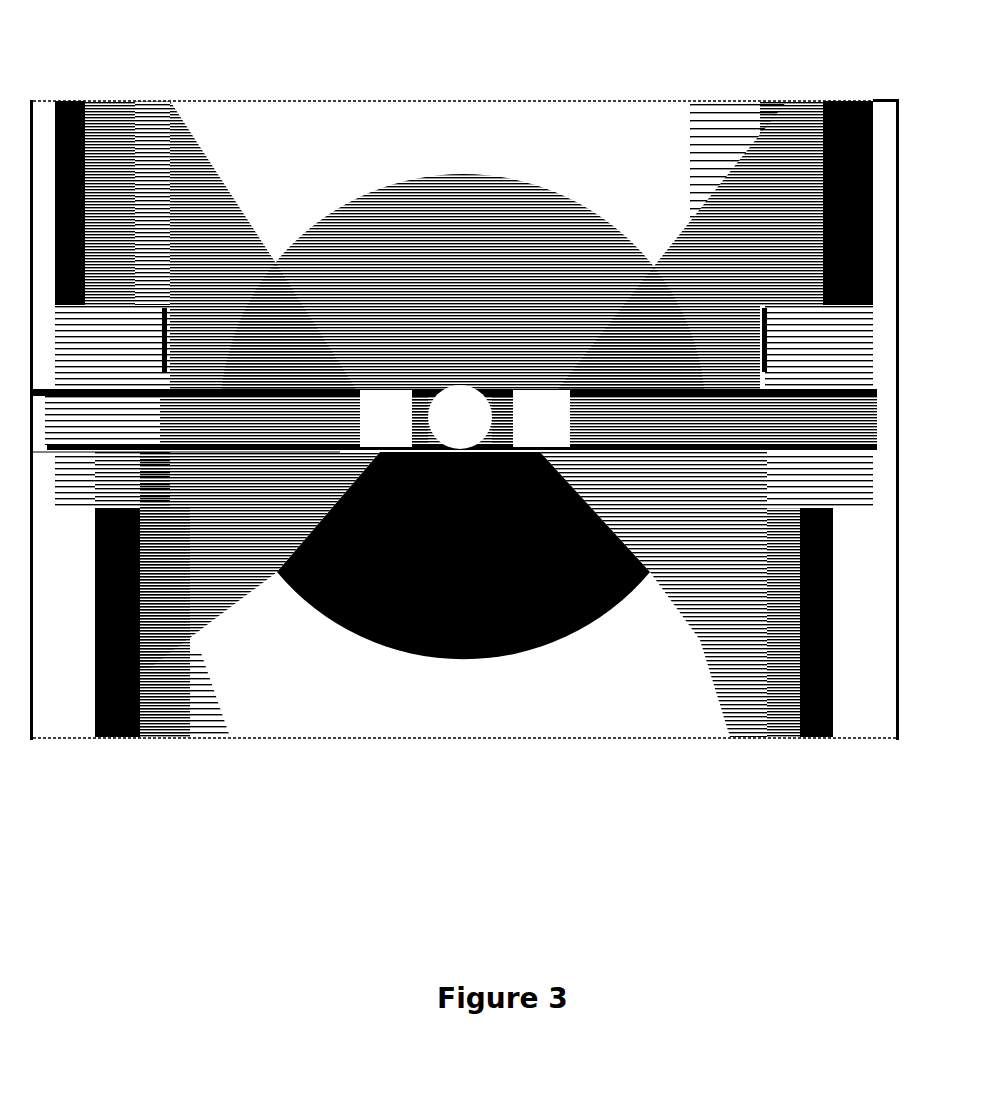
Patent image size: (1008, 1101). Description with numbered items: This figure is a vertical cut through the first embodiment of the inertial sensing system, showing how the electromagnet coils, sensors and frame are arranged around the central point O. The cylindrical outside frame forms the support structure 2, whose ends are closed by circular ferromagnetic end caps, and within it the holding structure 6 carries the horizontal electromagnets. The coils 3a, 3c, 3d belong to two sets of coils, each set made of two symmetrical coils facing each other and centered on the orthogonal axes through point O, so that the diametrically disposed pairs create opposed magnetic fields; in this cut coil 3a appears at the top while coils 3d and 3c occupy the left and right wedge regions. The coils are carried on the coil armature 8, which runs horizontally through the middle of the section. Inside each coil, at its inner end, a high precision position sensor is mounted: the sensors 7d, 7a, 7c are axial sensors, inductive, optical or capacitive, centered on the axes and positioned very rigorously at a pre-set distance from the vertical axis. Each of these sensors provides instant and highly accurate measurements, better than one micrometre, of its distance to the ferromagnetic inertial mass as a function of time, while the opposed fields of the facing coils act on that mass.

The support structure 2 is at (681, 705).
The coil 3a is at (431, 224).
The coil 3c is at (723, 268).
The coil 3d is at (224, 286).
The holding structure for the horizontal electromagnets 6 is at (838, 506).
The high precision position sensor 7a is at (365, 642).
The high precision position sensor 7c is at (528, 446).
The high precision position sensor 7d is at (396, 440).
The coil armature 8 is at (132, 452).